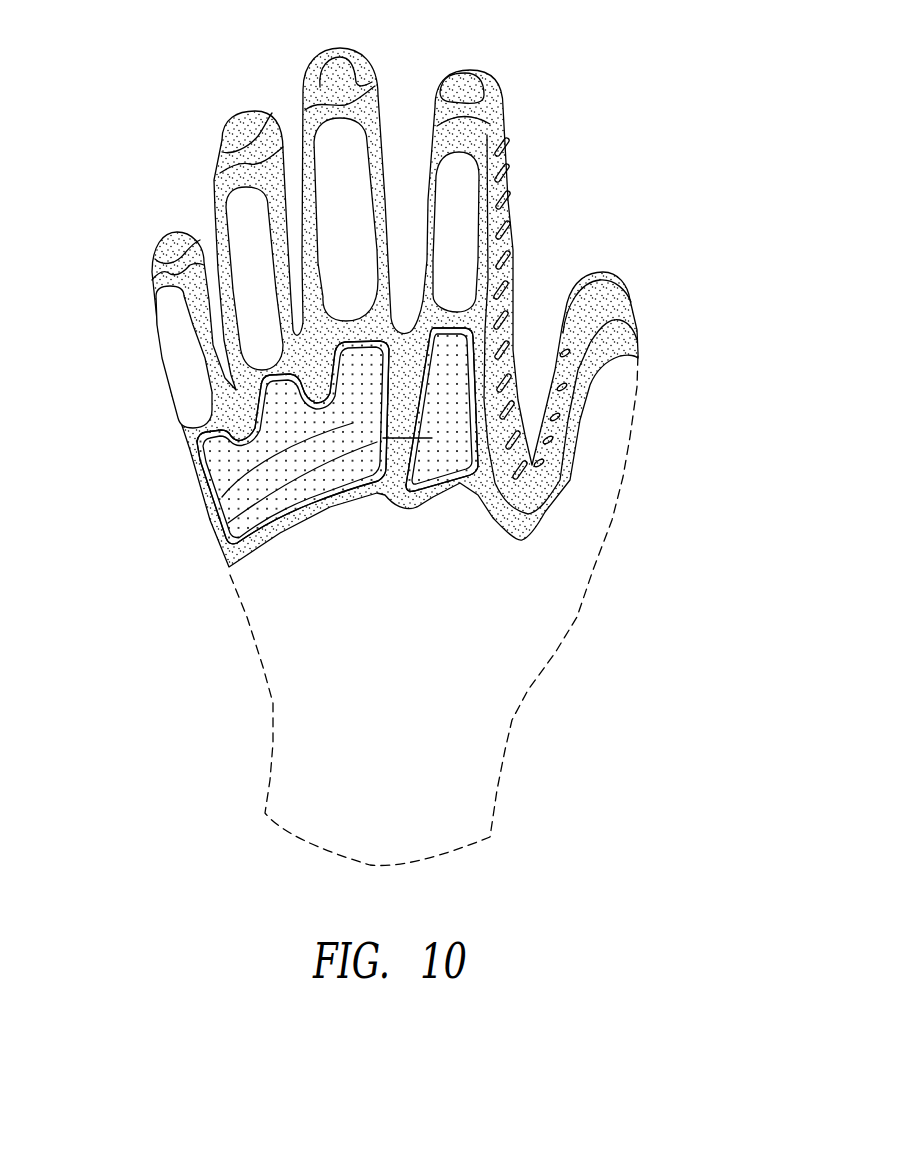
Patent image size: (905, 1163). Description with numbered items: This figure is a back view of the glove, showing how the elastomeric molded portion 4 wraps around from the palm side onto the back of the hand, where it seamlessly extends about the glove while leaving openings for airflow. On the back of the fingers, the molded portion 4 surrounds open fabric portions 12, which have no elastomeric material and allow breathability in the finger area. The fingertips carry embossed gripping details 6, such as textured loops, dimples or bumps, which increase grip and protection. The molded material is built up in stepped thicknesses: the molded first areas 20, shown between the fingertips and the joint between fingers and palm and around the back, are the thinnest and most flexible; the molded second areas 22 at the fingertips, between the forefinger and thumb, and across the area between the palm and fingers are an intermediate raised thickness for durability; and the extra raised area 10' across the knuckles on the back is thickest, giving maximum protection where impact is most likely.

The molded portion 4 is at (372, 498).
The embossed gripping details 6 is at (173, 240).
The extra raised area 10' is at (269, 442).
The open fabric portions 12 is at (447, 202).
The molded first areas 20 is at (400, 367).
The molded second areas 22 is at (161, 265).